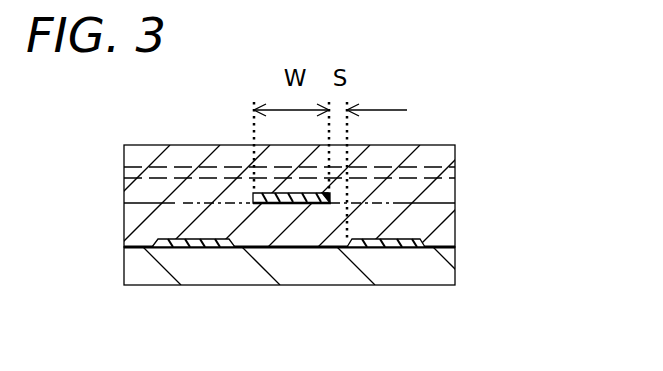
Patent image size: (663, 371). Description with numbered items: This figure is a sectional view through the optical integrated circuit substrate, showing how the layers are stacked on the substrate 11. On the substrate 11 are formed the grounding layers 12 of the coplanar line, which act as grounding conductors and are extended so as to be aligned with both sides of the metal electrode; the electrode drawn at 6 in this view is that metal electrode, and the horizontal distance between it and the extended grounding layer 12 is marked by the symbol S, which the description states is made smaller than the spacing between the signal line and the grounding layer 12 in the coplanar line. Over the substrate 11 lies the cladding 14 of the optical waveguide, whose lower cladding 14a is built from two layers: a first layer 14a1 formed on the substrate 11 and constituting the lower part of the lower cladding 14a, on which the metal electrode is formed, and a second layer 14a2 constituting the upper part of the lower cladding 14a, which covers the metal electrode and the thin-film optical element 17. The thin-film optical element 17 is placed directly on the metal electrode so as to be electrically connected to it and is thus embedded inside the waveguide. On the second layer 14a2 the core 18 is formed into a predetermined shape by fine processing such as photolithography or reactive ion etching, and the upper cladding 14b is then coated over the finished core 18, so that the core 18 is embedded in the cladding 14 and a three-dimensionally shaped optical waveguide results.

The center electrode 6 is at (273, 204).
The substrate 11 is at (433, 272).
The grounding layer 12 is at (393, 247).
The cladding 14 is at (440, 162).
The lower cladding 14a is at (435, 197).
The first layer 14a1 is at (448, 230).
The second layer 14a2 is at (437, 186).
The upper cladding 14b is at (440, 153).
The thin-film optical element 17 is at (312, 205).
The core 18 is at (418, 180).